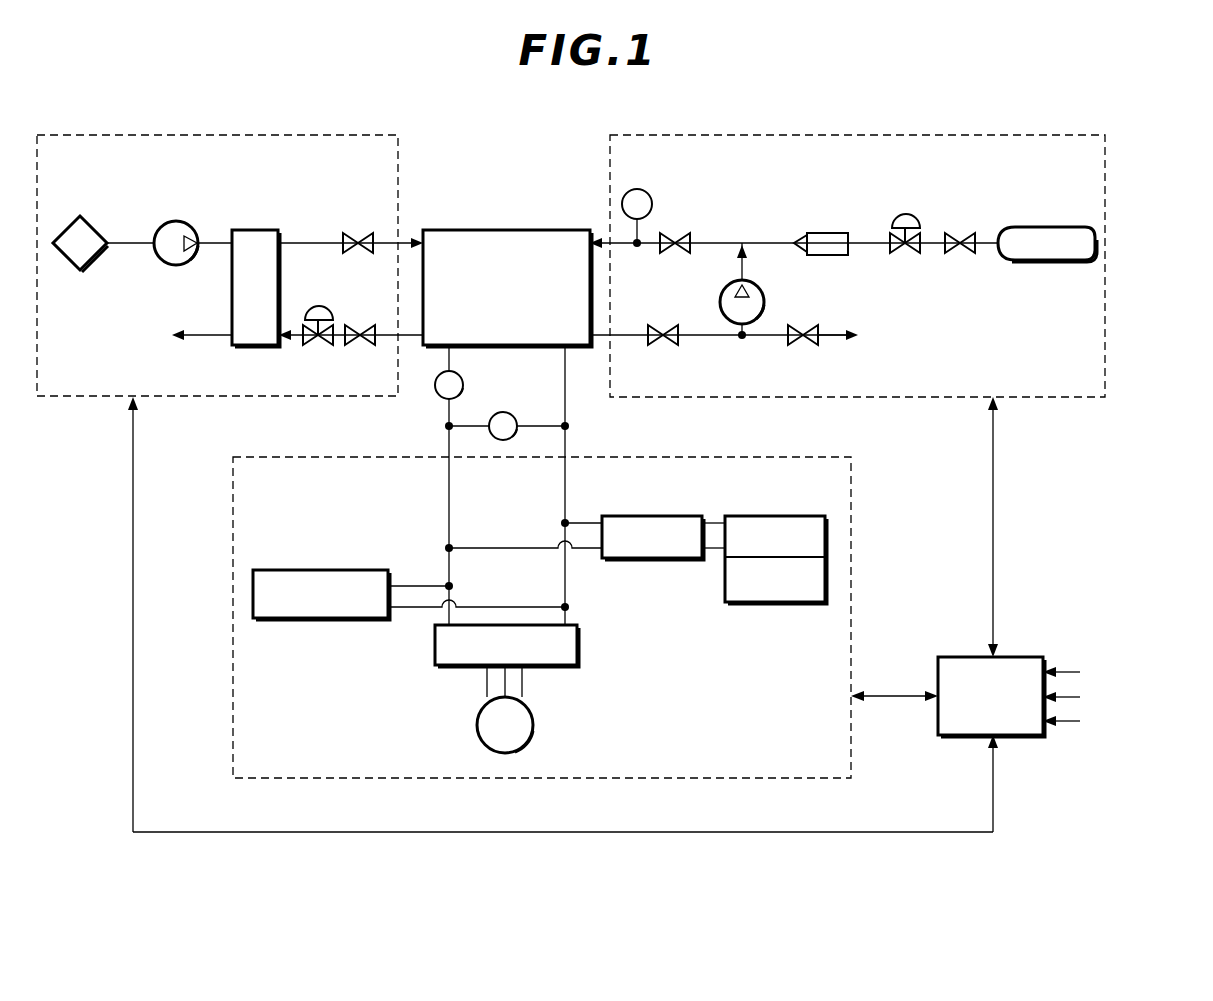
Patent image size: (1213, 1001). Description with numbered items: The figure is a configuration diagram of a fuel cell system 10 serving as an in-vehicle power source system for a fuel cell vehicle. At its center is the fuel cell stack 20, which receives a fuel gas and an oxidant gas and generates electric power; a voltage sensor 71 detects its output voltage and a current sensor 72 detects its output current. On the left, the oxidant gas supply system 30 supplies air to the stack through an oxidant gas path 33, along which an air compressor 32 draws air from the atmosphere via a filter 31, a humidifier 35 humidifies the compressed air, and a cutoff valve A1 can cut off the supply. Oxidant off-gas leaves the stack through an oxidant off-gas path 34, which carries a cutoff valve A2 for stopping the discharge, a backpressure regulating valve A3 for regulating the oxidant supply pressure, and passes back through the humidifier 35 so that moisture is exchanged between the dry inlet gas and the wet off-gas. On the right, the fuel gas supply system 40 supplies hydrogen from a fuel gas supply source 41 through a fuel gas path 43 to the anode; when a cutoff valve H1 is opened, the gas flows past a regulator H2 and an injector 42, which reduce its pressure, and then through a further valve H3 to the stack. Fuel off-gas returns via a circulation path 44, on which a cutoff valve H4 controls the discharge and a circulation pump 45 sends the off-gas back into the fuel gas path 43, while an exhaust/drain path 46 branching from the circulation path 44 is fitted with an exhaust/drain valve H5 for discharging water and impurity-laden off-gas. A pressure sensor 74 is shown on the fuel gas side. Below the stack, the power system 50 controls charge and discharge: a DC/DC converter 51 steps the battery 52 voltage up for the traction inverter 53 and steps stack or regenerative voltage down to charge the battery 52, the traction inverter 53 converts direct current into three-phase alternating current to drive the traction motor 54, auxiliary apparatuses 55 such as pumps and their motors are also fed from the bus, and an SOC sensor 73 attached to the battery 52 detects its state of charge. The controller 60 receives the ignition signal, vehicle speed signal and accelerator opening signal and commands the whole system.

The fuel cell system 10 is at (1094, 100).
The fuel cell stack 20 is at (505, 229).
The oxidant gas supply system 30 is at (182, 135).
The filter 31 is at (93, 228).
The air compressor 32 is at (176, 221).
The oxidant gas path 33 is at (293, 243).
The oxidant off-gas path 34 is at (372, 326).
The humidifier 35 is at (255, 230).
The cutoff valve A1 is at (362, 232).
The cutoff valve A2 is at (365, 345).
The backpressure regulating valve A3 is at (320, 307).
The fuel gas supply system 40 is at (940, 135).
The fuel gas supply source 41 is at (1047, 227).
The injector 42 is at (822, 233).
The fuel gas path 43 is at (714, 243).
The circulation path 44 is at (712, 335).
The circulation pump 45 is at (770, 300).
The exhaust/drain path 46 is at (832, 334).
The cutoff valve H1 is at (965, 234).
The regulator H2 is at (908, 213).
The hydrogen supply valve H3 is at (682, 235).
The cutoff valve H4 is at (672, 342).
The exhaust/drain valve H5 is at (805, 345).
The power system 50 is at (851, 527).
The DC/DC converter 51 is at (648, 516).
The battery 52 is at (768, 516).
The traction inverter 53 is at (578, 648).
The traction motor 54 is at (533, 725).
The auxiliary apparatuses 55 is at (322, 570).
The controller 60 is at (1017, 657).
The voltage sensor 71 is at (508, 413).
The current sensor 72 is at (436, 397).
The SOC sensor 73 is at (755, 602).
The pressure sensor 74 is at (637, 189).